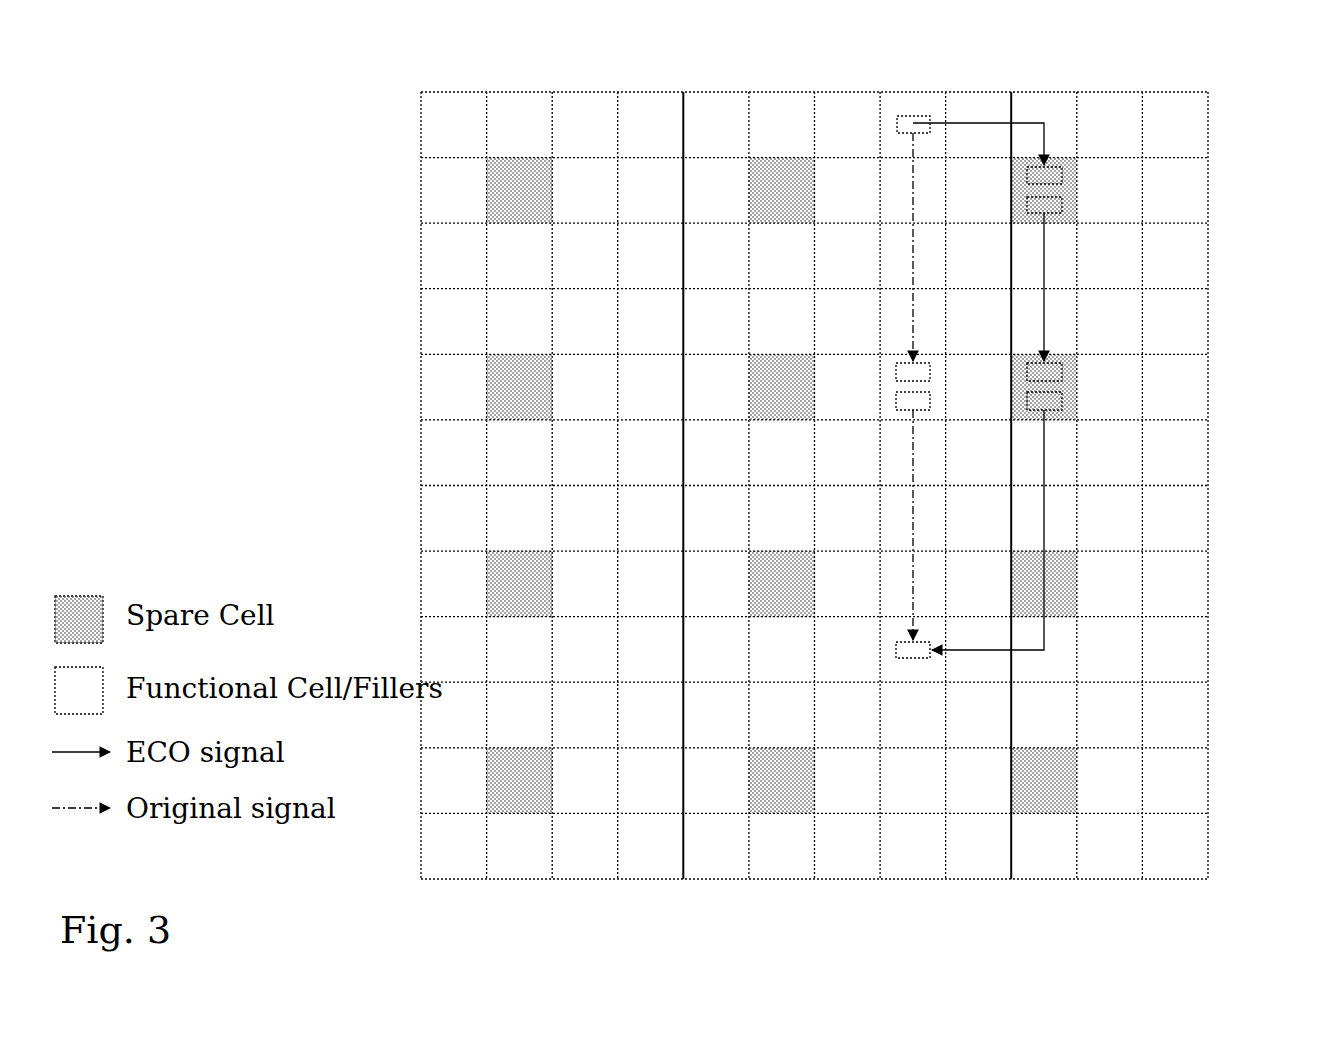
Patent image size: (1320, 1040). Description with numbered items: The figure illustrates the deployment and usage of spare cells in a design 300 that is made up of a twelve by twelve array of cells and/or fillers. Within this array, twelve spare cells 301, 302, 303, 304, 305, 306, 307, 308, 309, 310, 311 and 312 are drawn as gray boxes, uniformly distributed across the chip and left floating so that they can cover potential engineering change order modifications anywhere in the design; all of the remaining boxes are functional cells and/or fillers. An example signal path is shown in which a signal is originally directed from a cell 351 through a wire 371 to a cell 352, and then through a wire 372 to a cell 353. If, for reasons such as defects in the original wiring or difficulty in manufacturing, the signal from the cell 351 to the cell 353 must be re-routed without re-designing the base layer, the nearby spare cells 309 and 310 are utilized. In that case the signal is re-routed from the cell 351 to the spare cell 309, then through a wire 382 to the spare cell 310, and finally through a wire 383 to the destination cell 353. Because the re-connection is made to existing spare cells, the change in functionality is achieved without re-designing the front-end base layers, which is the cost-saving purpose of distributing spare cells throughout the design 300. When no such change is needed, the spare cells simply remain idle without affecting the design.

The design 300 is at (1232, 76).
The spare cell 301 is at (500, 192).
The spare cell 302 is at (500, 388).
The spare cell 303 is at (500, 584).
The spare cell 304 is at (500, 781).
The spare cell 305 is at (777, 170).
The spare cell 306 is at (765, 385).
The spare cell 307 is at (760, 595).
The spare cell 308 is at (778, 800).
The spare cell 309 is at (1070, 190).
The spare cell 310 is at (1070, 386).
The spare cell 311 is at (1070, 584).
The spare cell 312 is at (1070, 778).
The cell 351 is at (928, 108).
The cell 352 is at (886, 388).
The cell 353 is at (886, 653).
The wire 371 is at (913, 252).
The wire 372 is at (913, 575).
The wire 382 is at (1045, 253).
The wire 383 is at (1045, 458).